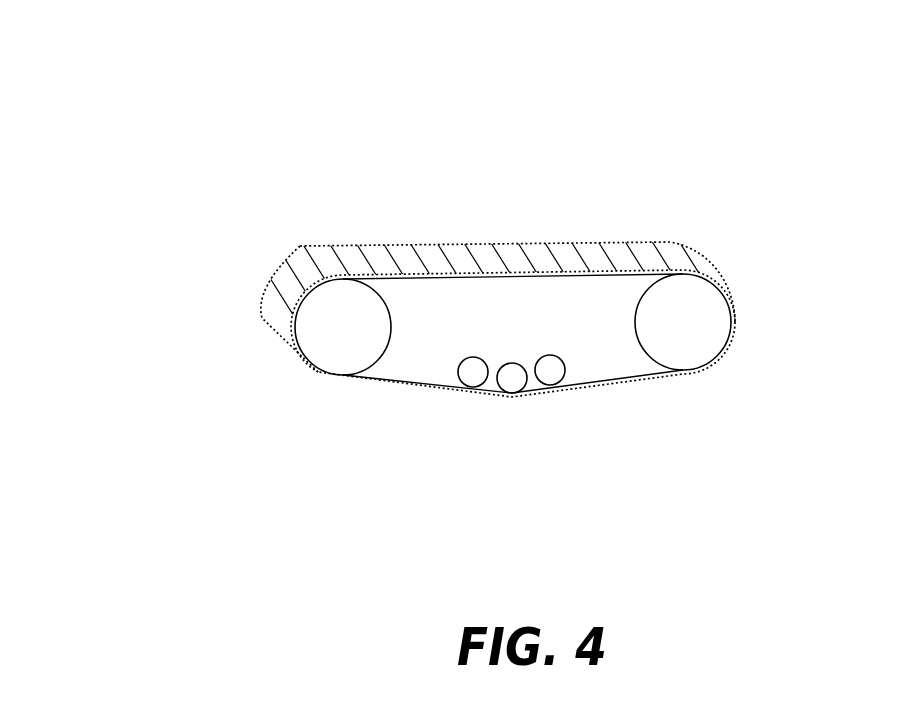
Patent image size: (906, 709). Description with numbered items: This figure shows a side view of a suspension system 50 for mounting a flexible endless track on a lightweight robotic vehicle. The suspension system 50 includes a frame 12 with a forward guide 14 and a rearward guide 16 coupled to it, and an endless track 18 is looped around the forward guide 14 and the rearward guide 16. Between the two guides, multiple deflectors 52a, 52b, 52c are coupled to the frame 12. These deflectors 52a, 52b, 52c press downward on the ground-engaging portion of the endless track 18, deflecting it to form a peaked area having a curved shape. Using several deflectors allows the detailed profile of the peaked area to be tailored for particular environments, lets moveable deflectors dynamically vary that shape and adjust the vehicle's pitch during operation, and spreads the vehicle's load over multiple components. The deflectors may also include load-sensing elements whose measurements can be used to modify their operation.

The suspension system 50 is at (170, 78).
The frame 12 is at (440, 288).
The endless track 18 is at (633, 250).
The forward guide 14 is at (318, 345).
The rearward guide 16 is at (700, 342).
The deflector 52a is at (468, 385).
The deflector 52b is at (512, 383).
The deflector 52c is at (550, 383).